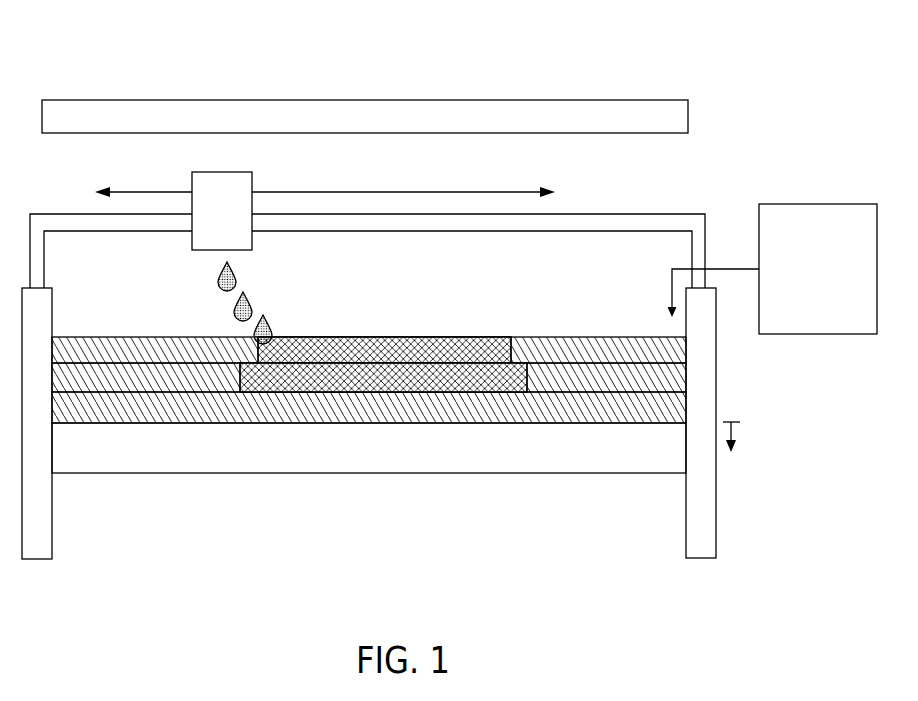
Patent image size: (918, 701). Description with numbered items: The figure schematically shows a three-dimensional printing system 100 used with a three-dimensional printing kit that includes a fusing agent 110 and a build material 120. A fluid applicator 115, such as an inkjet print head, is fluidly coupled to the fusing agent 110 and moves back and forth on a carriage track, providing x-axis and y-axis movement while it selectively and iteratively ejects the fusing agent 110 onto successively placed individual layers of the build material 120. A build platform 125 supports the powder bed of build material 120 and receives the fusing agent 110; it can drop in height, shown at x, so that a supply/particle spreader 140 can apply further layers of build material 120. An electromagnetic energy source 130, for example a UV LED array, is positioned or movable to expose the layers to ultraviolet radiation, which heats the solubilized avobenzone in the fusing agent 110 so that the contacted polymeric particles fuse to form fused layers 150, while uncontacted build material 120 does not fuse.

The three-dimensional printing system 100 is at (149, 34).
The fusing agent 110 is at (217, 279).
The fluid applicator 115 is at (242, 223).
The build material 120 is at (350, 410).
The build platform 125 is at (180, 448).
The electromagnetic energy source 130 is at (385, 128).
The supply/particle spreader 140 is at (838, 280).
The fused layers 150 is at (398, 348).